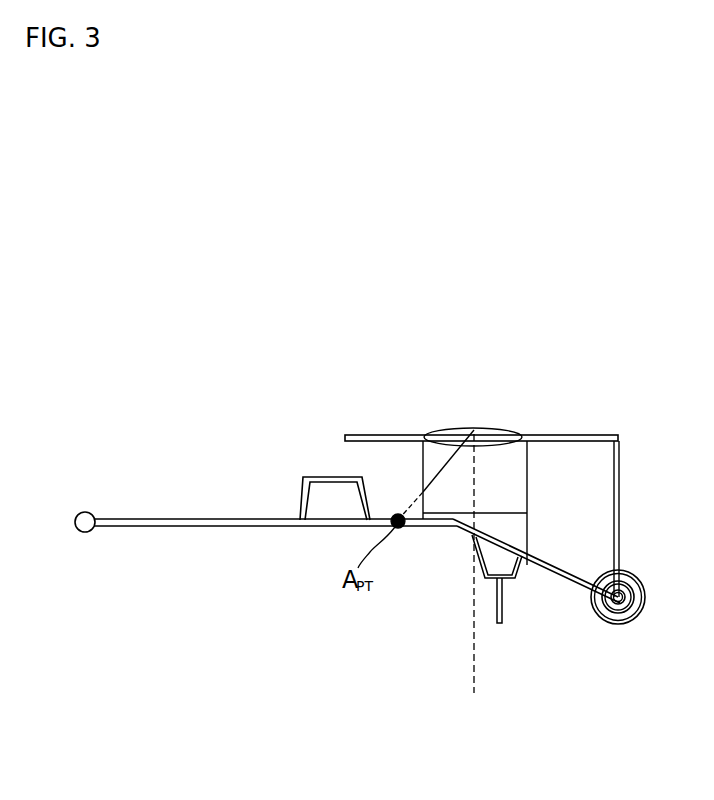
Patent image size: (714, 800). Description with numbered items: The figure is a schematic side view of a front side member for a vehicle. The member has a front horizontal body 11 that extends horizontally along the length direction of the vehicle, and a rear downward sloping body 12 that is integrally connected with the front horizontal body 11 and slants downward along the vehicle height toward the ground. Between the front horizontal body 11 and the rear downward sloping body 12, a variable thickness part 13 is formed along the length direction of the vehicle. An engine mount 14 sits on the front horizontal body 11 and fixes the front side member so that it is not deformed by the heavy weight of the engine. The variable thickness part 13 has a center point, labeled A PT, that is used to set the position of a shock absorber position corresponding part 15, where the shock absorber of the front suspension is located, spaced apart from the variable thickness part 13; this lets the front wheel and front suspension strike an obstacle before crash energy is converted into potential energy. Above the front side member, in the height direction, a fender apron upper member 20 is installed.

The front horizontal body 11 is at (145, 523).
The rear downward sloping body 12 is at (568, 582).
The variable thickness part 13 is at (412, 544).
The engine mount 14 is at (308, 477).
The shock absorber position corresponding part 15 is at (498, 428).
The fender apron upper member 20 is at (377, 435).